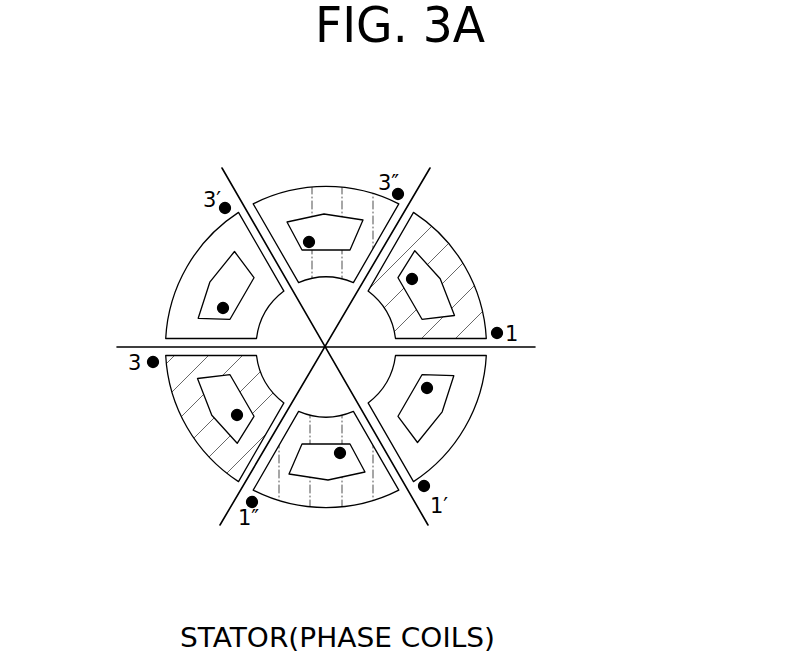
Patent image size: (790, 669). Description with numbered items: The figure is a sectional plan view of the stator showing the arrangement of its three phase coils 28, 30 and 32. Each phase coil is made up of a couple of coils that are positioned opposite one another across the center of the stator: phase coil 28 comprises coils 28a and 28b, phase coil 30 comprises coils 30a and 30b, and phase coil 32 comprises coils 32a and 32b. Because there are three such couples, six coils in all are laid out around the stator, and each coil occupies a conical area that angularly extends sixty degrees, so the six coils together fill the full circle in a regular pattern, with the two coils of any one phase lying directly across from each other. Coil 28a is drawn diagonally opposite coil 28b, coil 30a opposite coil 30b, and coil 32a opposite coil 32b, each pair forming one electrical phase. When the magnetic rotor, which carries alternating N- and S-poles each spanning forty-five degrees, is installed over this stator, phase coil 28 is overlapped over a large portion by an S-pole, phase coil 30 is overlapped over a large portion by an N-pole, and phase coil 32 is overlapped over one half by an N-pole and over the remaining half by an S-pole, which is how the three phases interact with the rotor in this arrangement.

The phase coil 28 is at (324, 327).
The coil 28a is at (437, 231).
The coil 28b is at (186, 423).
The phase coil 30 is at (327, 358).
The coil 30a is at (481, 392).
The coil 30b is at (191, 260).
The phase coil 32 is at (284, 346).
The coil 32a is at (286, 505).
The coil 32b is at (325, 187).